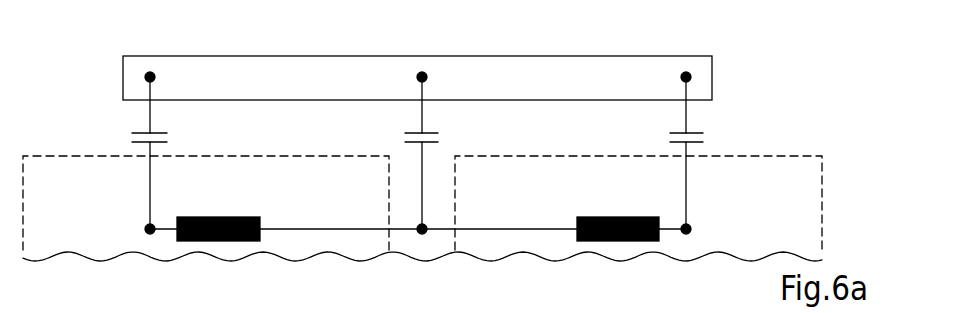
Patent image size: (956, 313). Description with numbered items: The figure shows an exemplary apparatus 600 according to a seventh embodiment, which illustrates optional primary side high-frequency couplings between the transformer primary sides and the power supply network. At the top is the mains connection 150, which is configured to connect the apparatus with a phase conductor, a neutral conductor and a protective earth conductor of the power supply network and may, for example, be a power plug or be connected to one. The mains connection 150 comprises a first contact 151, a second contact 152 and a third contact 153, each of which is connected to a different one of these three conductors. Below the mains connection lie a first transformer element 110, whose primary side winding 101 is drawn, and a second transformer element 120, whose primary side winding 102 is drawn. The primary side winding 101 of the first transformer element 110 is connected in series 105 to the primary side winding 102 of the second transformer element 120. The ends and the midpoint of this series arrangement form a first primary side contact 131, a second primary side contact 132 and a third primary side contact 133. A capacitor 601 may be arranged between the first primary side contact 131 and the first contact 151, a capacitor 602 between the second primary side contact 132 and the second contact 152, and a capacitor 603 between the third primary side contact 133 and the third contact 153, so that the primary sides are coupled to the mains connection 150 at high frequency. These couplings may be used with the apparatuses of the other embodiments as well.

The apparatus 600 is at (752, 83).
The mains connection 150 is at (563, 55).
The first contact 151 is at (152, 72).
The second contact 152 is at (424, 72).
The third contact 153 is at (688, 72).
The capacitor 601 is at (168, 138).
The capacitor 602 is at (669, 137).
The capacitor 603 is at (439, 137).
The first transformer element 110 is at (78, 155).
The second transformer element 120 is at (765, 155).
The primary side winding 101 is at (206, 216).
The primary side winding 102 is at (603, 216).
The first primary side contact 131 is at (146, 226).
The second primary side contact 132 is at (690, 226).
The third primary side contact 133 is at (418, 226).
The series connection 105 is at (403, 231).